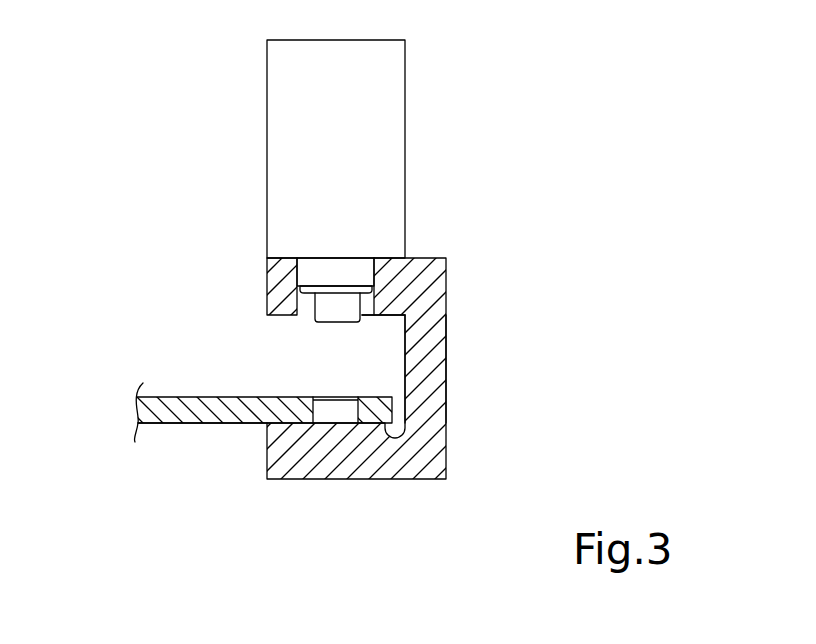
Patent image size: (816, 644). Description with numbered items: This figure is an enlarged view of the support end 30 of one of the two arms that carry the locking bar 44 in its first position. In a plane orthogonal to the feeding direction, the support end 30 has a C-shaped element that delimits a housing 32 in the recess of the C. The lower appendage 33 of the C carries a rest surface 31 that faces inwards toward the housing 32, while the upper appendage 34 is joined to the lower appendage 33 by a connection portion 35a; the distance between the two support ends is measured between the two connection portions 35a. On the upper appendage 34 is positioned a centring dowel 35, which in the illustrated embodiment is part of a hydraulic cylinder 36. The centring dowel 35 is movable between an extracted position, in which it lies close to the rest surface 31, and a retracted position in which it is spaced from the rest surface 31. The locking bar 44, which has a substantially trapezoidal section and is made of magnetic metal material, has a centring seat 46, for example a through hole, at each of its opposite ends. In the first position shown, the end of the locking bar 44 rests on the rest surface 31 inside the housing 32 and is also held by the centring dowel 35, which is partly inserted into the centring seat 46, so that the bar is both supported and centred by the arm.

The support end 30 is at (492, 295).
The rest surface 31 is at (285, 410).
The housing 32 is at (322, 346).
The lower appendage 33 is at (298, 462).
The upper appendage 34 is at (280, 292).
The centring dowel 35 is at (346, 311).
The connection portion 35a is at (428, 422).
The hydraulic cylinder 36 is at (407, 108).
The locking bar 44 is at (172, 427).
The centring seat 46 is at (347, 415).